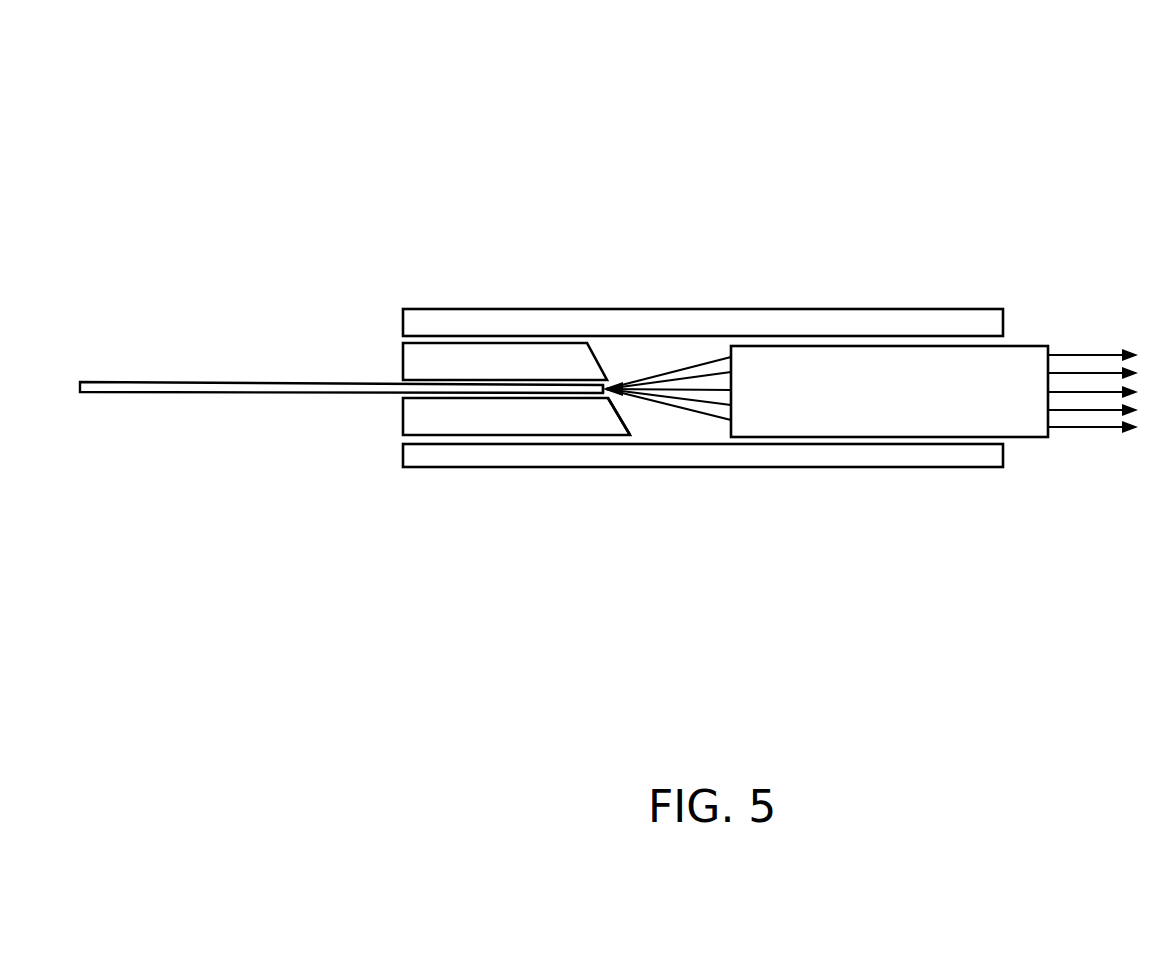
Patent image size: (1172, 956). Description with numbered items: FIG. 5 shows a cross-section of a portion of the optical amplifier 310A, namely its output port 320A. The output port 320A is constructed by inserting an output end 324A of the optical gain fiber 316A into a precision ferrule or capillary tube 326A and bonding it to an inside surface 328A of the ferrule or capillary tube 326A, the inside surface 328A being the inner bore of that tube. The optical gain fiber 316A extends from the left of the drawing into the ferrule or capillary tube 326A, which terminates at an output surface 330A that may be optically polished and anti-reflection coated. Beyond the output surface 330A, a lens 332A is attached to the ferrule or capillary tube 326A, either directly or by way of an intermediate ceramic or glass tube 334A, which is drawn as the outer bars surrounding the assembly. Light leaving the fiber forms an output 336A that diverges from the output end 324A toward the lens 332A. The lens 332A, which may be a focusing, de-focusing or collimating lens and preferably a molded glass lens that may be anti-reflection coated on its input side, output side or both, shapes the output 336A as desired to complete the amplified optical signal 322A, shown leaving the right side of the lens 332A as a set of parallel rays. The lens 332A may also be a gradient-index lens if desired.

The optical amplifier 310A is at (940, 166).
The optical gain fiber 316A is at (242, 392).
The output port 320A is at (1043, 470).
The amplified optical signal 322A is at (1112, 430).
The output end 324A is at (557, 385).
The ferrule or capillary tube 326A is at (477, 363).
The inside surface 328A is at (487, 398).
The output surface 330A is at (642, 420).
The lens 332A is at (895, 450).
The intermediate ceramic or glass tube 334A is at (396, 457).
The output 336A is at (664, 358).